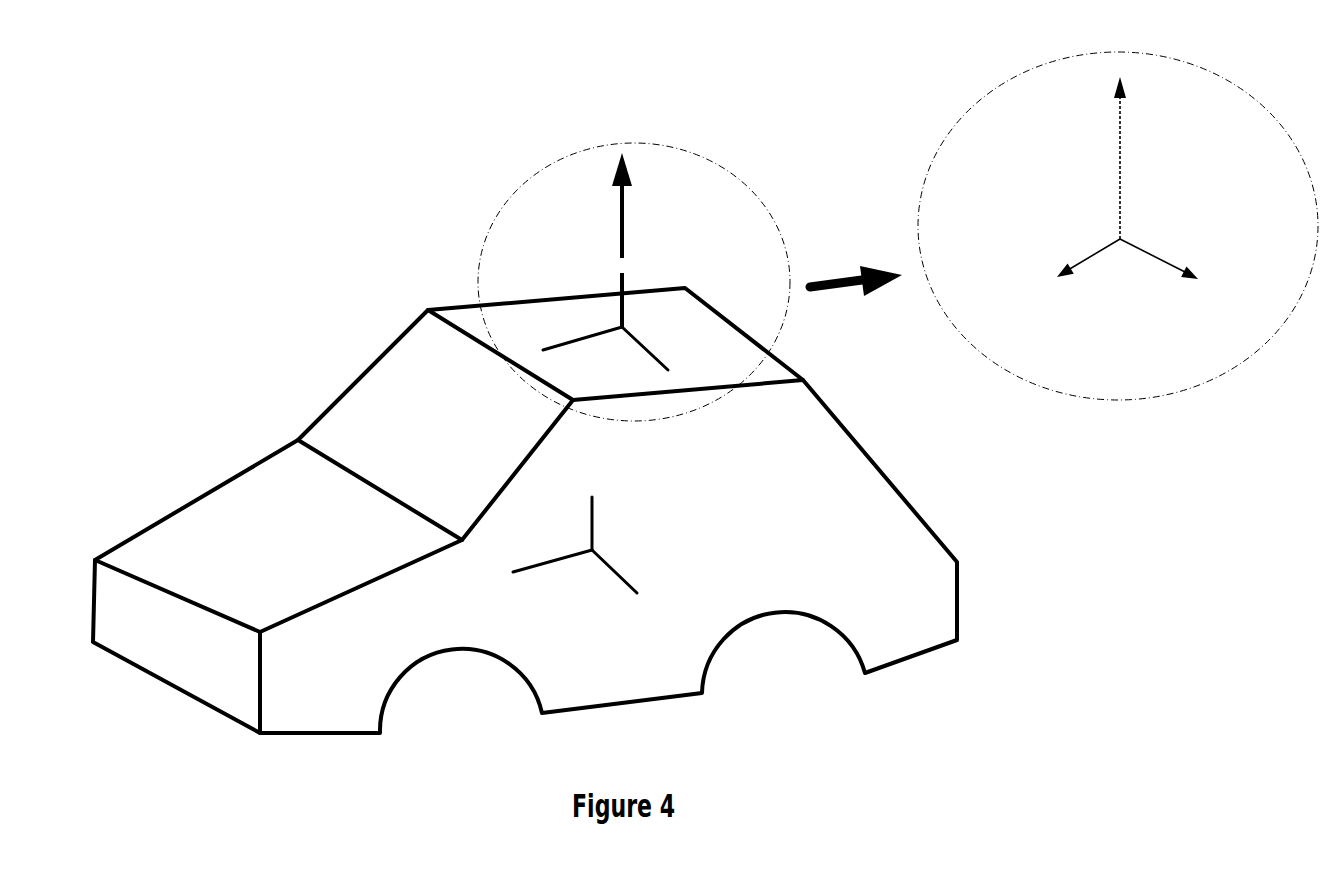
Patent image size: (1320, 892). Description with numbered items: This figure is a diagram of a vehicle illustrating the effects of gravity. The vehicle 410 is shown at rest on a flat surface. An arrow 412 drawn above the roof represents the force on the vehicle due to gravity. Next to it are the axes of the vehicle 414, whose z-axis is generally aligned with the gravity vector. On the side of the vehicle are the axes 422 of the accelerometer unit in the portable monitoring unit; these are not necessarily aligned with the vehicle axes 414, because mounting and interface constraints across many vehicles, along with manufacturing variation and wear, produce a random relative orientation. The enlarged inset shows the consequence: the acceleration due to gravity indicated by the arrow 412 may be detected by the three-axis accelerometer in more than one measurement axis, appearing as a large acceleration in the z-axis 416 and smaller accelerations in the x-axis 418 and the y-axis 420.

The vehicle 410 is at (268, 500).
The arrow 412 is at (618, 185).
The axes of the vehicle 414 is at (620, 312).
The z-axis 416 is at (1120, 170).
The x-axis 418 is at (1088, 265).
The y-axis 420 is at (1166, 267).
The axes of the accelerometer unit 422 is at (595, 535).